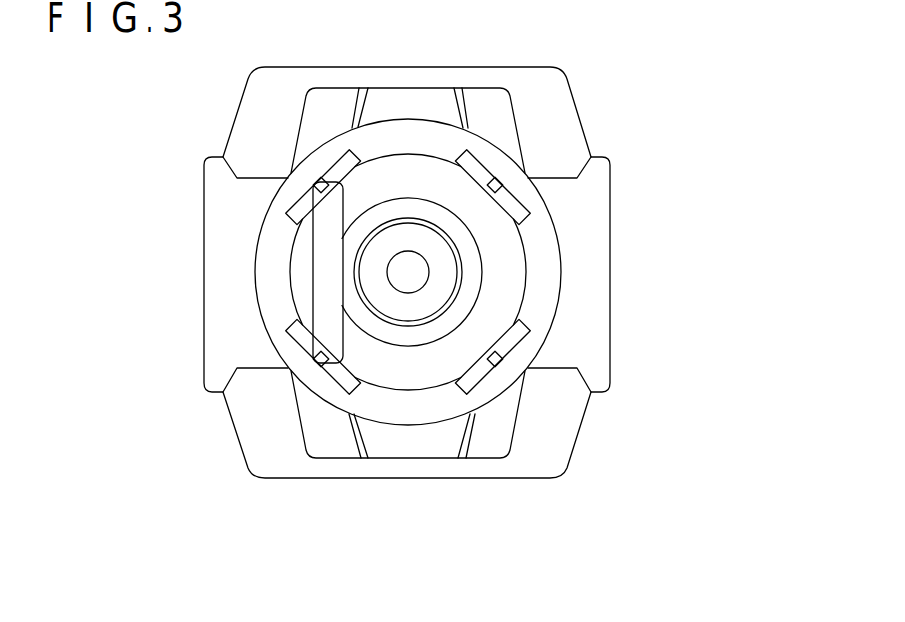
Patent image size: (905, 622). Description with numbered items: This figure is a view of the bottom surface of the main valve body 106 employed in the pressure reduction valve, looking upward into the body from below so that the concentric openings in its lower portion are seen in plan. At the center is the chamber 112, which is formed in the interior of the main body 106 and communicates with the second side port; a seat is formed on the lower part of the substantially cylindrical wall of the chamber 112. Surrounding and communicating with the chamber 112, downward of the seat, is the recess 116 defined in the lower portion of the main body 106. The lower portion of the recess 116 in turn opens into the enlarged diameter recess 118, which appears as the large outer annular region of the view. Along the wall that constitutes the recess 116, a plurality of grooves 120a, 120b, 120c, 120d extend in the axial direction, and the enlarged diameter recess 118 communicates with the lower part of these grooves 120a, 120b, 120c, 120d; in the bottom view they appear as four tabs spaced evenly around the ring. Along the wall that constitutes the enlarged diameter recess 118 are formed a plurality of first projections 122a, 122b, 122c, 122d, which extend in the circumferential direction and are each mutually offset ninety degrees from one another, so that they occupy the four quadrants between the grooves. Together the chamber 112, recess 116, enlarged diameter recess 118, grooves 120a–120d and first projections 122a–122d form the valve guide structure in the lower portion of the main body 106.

The main valve body 106 is at (590, 108).
The chamber 112 is at (447, 268).
The recess 116 is at (516, 286).
The enlarged diameter recess 118 is at (303, 336).
The groove 120a is at (318, 182).
The groove 120b is at (500, 185).
The groove 120c is at (499, 363).
The groove 120d is at (319, 364).
The first projection 122a is at (287, 242).
The first projection 122b is at (414, 165).
The first projection 122c is at (535, 243).
The first projection 122d is at (412, 397).